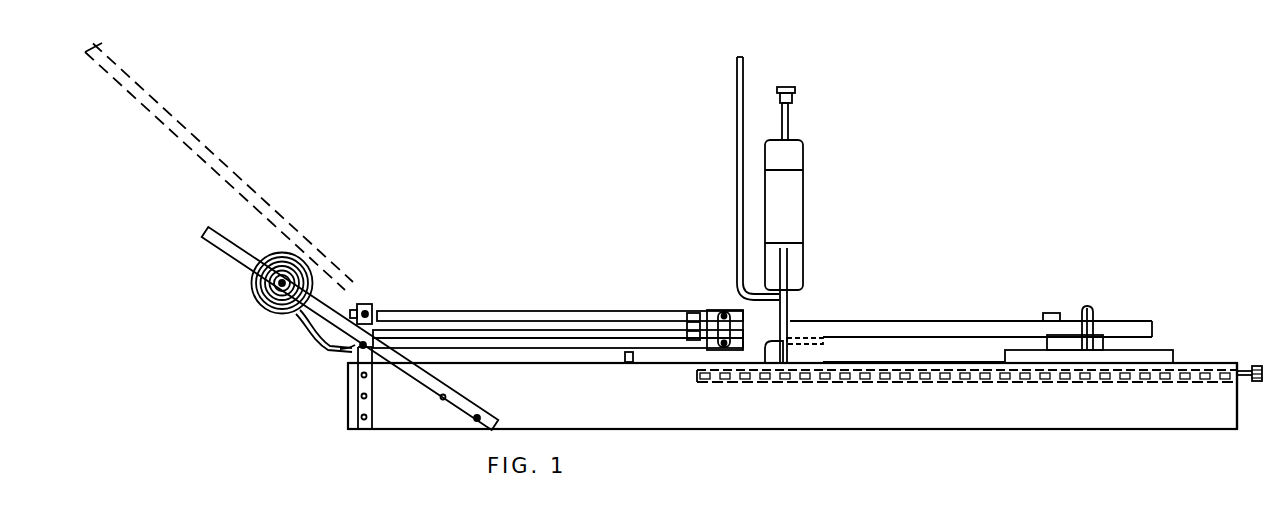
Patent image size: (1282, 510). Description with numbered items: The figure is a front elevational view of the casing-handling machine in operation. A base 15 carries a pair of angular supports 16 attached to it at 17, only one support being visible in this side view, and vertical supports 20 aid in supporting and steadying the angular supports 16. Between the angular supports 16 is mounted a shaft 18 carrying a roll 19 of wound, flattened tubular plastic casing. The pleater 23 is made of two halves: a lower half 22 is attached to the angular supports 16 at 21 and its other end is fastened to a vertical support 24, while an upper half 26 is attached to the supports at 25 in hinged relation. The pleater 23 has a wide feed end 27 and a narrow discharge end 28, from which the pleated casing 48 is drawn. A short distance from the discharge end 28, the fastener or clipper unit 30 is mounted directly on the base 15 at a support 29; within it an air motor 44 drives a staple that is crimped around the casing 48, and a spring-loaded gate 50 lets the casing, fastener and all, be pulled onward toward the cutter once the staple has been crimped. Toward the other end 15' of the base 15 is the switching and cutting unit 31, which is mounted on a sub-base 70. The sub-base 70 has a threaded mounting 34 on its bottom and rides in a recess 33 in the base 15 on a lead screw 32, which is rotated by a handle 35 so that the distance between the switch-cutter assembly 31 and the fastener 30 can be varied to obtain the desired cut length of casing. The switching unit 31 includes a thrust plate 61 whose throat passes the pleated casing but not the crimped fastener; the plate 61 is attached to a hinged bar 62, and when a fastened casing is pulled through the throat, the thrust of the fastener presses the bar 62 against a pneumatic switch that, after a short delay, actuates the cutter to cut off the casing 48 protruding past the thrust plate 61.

The base 15 is at (792, 419).
The other end of base 15' is at (1255, 417).
The angular supports 16 is at (213, 242).
The attachment point of angular supports 17 is at (443, 400).
The shaft 18 is at (262, 293).
The roll of casing 19 is at (262, 307).
The vertical supports 20 is at (355, 362).
The attachment point of lower pleater half 21 is at (380, 340).
The lower half of pleater 22 is at (548, 350).
The pleater 23 is at (528, 291).
The vertical support 24 is at (632, 363).
The hinge attachment point of upper pleater half 25 is at (366, 305).
The upper half of pleater 26 is at (198, 137).
The feed end 27 is at (345, 352).
The discharge end 28 is at (745, 310).
The support 29 is at (768, 365).
The fastener unit 30 is at (825, 151).
The switching and cutting unit 31 is at (1128, 299).
The lead screw 32 is at (937, 384).
The recess 33 is at (870, 383).
The threaded mounting 34 is at (1080, 363).
The handle 35 is at (1250, 365).
The air motor 44 is at (795, 215).
The pleated casing 48 is at (760, 326).
The gate 50 is at (807, 344).
The thrust plate 61 is at (1089, 307).
The bar 62 is at (933, 358).
The sub-base 70 is at (1160, 355).